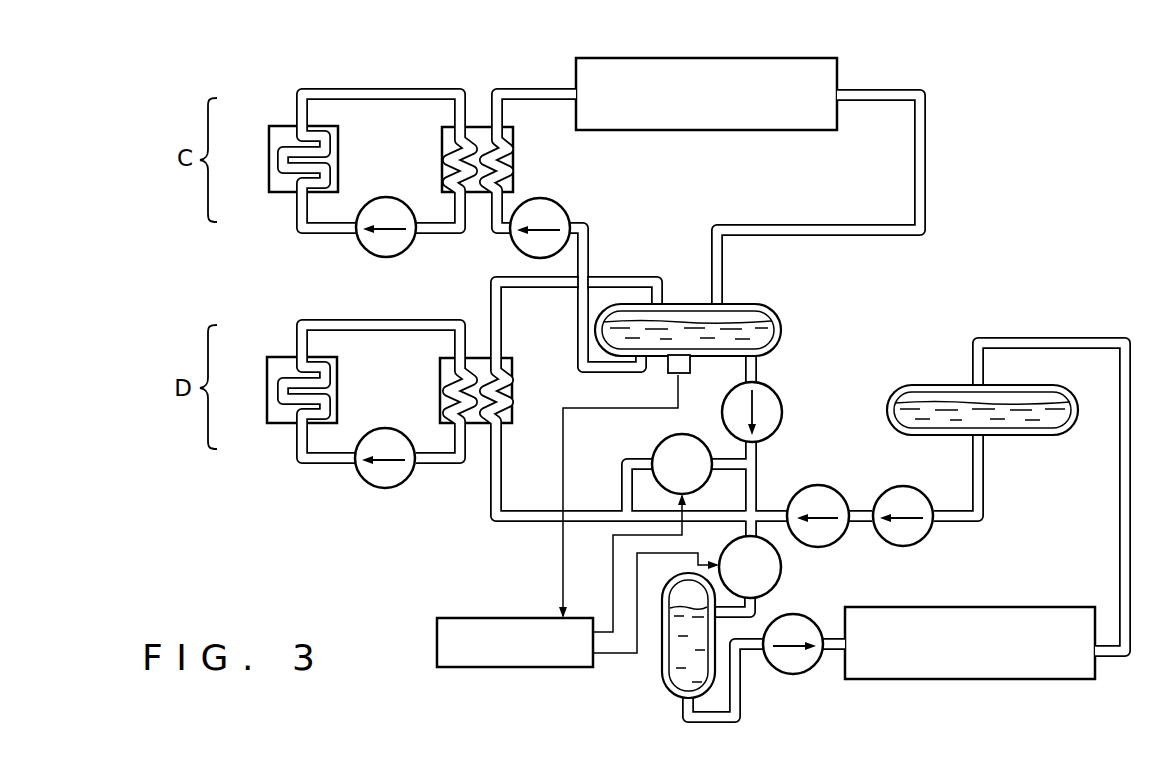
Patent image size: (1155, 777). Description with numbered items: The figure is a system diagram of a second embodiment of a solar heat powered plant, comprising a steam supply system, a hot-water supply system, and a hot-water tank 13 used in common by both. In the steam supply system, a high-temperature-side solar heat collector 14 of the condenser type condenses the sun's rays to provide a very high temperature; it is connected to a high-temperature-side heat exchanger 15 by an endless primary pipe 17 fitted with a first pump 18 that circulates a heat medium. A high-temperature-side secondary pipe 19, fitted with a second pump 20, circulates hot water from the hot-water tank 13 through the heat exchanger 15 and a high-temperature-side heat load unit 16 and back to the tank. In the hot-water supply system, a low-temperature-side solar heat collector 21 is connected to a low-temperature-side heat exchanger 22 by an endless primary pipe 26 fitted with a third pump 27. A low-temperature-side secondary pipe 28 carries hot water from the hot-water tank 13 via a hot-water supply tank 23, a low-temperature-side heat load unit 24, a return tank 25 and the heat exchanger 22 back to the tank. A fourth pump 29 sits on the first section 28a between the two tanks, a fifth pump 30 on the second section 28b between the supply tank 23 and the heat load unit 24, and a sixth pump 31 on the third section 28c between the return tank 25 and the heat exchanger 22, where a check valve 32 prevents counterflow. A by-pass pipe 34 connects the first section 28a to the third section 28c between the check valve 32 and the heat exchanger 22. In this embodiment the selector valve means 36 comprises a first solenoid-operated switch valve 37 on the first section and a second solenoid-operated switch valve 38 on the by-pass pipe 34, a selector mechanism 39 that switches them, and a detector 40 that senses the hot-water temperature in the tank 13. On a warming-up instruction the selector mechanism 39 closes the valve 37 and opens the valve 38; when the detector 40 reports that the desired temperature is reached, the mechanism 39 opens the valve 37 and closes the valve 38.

The hot-water tank 13 is at (754, 302).
The high-temperature-side solar heat collector 14 is at (280, 125).
The high-temperature-side heat exchanger 15 is at (513, 155).
The high-temperature-side heat load unit 16 is at (750, 131).
The primary pipe 17 is at (377, 101).
The first pump 18 is at (386, 258).
The high-temperature-side secondary pipe 19 is at (926, 158).
The second pump 20 is at (565, 217).
The low-temperature-side solar heat collector 21 is at (273, 357).
The low-temperature-side heat exchanger 22 is at (512, 375).
The hot-water supply tank 23 is at (662, 663).
The low-temperature-side heat load unit 24 is at (920, 607).
The return tank 25 is at (932, 384).
The primary pipe 26 is at (443, 465).
The third pump 27 is at (383, 489).
The low-temperature-side secondary pipe 28 is at (505, 522).
The first section 28a is at (757, 500).
The second section 28b is at (833, 652).
The third section 28c is at (960, 523).
The fourth pump 29 is at (781, 396).
The fifth pump 30 is at (793, 675).
The sixth pump 31 is at (917, 488).
The check valve 32 is at (840, 491).
The by-pass pipe 34 is at (621, 477).
The selector valve means 36 is at (577, 669).
The first solenoid-operated switch valve 37 is at (782, 570).
The second solenoid-operated switch valve 38 is at (660, 452).
The selector mechanism 39 is at (482, 669).
The detector 40 is at (692, 362).